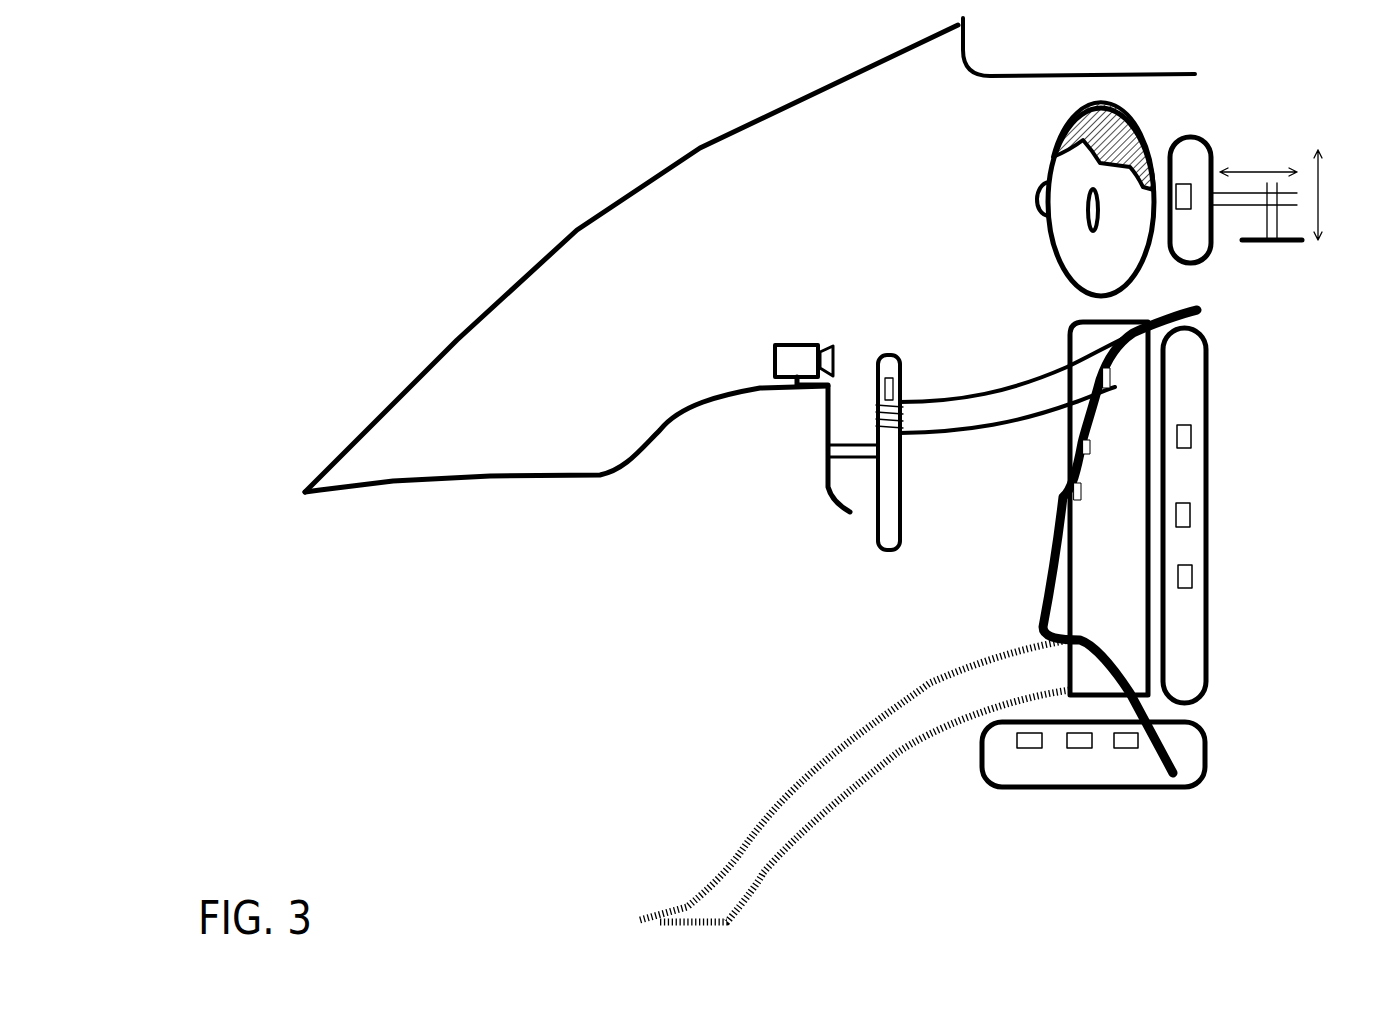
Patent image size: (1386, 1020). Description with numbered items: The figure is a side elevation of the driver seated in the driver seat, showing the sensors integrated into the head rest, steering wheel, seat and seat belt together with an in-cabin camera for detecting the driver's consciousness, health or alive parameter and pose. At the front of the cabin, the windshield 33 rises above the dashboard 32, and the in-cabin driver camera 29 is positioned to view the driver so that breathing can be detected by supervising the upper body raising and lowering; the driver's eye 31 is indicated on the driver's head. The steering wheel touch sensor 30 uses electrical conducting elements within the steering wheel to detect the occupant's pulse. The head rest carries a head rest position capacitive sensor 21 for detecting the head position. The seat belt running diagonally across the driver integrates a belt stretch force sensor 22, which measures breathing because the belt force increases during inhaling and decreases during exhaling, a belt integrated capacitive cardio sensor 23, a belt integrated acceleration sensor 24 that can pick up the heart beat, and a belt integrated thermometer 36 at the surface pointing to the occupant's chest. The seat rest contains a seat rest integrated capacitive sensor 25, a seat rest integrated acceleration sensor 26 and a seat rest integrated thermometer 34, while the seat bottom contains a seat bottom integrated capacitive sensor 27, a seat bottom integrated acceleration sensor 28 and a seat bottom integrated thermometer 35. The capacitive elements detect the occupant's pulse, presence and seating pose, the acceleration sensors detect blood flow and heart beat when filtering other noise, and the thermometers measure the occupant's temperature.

The head rest position capacitive sensor 21 is at (1188, 183).
The belt stretch force sensor 22 is at (1110, 383).
The belt integrated capacitive cardio sensor 23 is at (1093, 428).
The belt integrated acceleration sensor 24 is at (1085, 462).
The seat rest integrated capacitive sensor 25 is at (1190, 437).
The seat rest integrated acceleration sensor 26 is at (1185, 577).
The seat bottom integrated capacitive sensor 27 is at (1075, 748).
The seat bottom integrated acceleration sensor 28 is at (1120, 748).
The in-cabin driver camera 29 is at (800, 363).
The steering wheel touch sensor 30 is at (880, 345).
The driver's eye 31 is at (1050, 163).
The dashboard 32 is at (812, 437).
The windshield 33 is at (572, 232).
The seat rest integrated thermometer 34 is at (1183, 515).
The seat bottom integrated thermometer 35 is at (1027, 748).
The belt integrated thermometer 36 is at (1080, 500).